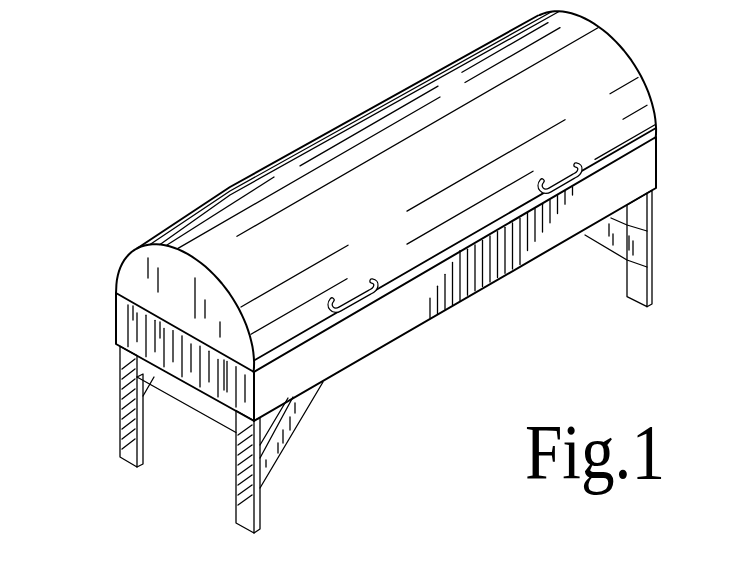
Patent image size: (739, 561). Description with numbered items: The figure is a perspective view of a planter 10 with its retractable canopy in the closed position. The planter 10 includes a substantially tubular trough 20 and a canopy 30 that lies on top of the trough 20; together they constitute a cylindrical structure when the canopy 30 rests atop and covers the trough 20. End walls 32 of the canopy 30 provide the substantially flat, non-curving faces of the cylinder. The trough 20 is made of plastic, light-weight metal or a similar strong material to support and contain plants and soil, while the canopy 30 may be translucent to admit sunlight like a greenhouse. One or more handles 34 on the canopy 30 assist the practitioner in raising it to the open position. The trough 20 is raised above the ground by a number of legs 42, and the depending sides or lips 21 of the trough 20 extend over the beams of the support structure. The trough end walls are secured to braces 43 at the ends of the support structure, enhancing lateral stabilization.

The planter 10 is at (166, 175).
The trough 20 is at (347, 349).
The depending sides 21 is at (129, 327).
The canopy 30 is at (466, 57).
The end walls 32 is at (134, 273).
The handles 34 is at (339, 299).
The legs 42 is at (127, 442).
The braces 43 is at (216, 407).